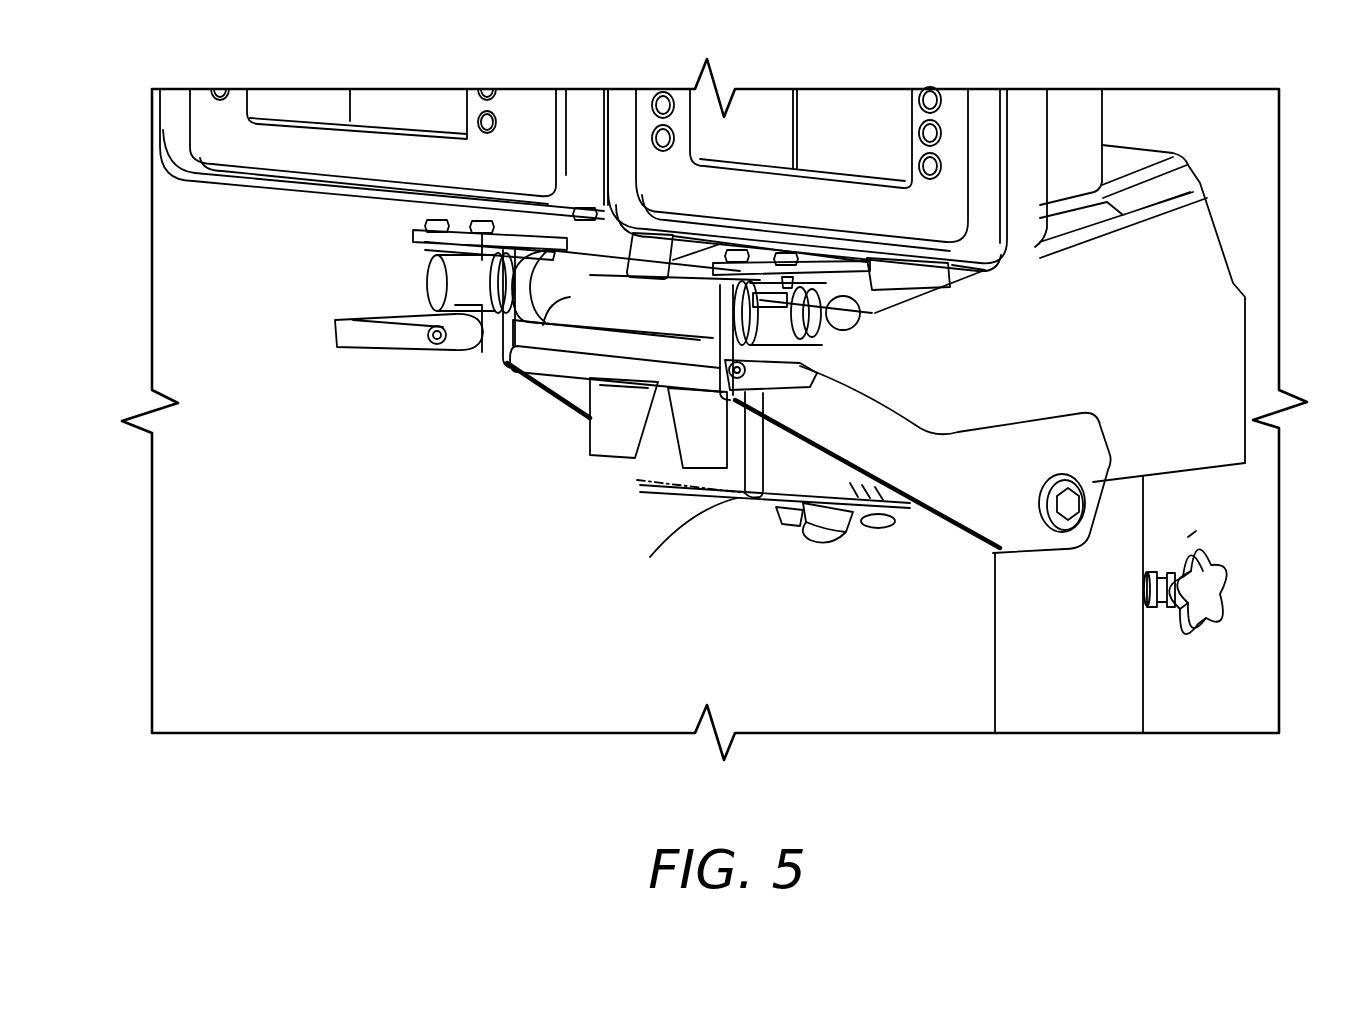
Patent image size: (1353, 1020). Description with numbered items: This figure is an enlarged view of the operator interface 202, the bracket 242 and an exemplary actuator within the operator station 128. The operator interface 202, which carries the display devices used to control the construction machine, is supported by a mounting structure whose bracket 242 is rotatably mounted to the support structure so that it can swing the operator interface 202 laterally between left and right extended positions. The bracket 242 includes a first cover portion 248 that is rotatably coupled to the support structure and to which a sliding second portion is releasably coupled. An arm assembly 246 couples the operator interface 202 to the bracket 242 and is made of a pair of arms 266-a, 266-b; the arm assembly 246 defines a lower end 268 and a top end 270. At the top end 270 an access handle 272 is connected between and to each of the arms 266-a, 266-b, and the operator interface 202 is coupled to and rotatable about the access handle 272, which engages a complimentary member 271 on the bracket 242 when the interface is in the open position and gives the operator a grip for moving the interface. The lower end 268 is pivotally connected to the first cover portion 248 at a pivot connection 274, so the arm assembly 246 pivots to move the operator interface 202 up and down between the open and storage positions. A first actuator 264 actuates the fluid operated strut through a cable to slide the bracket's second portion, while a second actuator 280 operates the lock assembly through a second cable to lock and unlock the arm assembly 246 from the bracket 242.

The operator station 128 is at (128, 128).
The operator interface 202 is at (352, 220).
The bracket 242 is at (1200, 283).
The arm assembly 246 is at (820, 414).
The first cover portion 248 is at (1199, 232).
The first actuator 264 is at (700, 444).
The arm 266-a is at (522, 378).
The arm 266-b is at (920, 476).
The lower end 268 is at (1046, 547).
The top end 270 is at (675, 462).
The complimentary member 271 is at (714, 345).
The access handle 272 is at (528, 393).
The pivot connection 274 is at (1082, 507).
The second actuator 280 is at (592, 437).